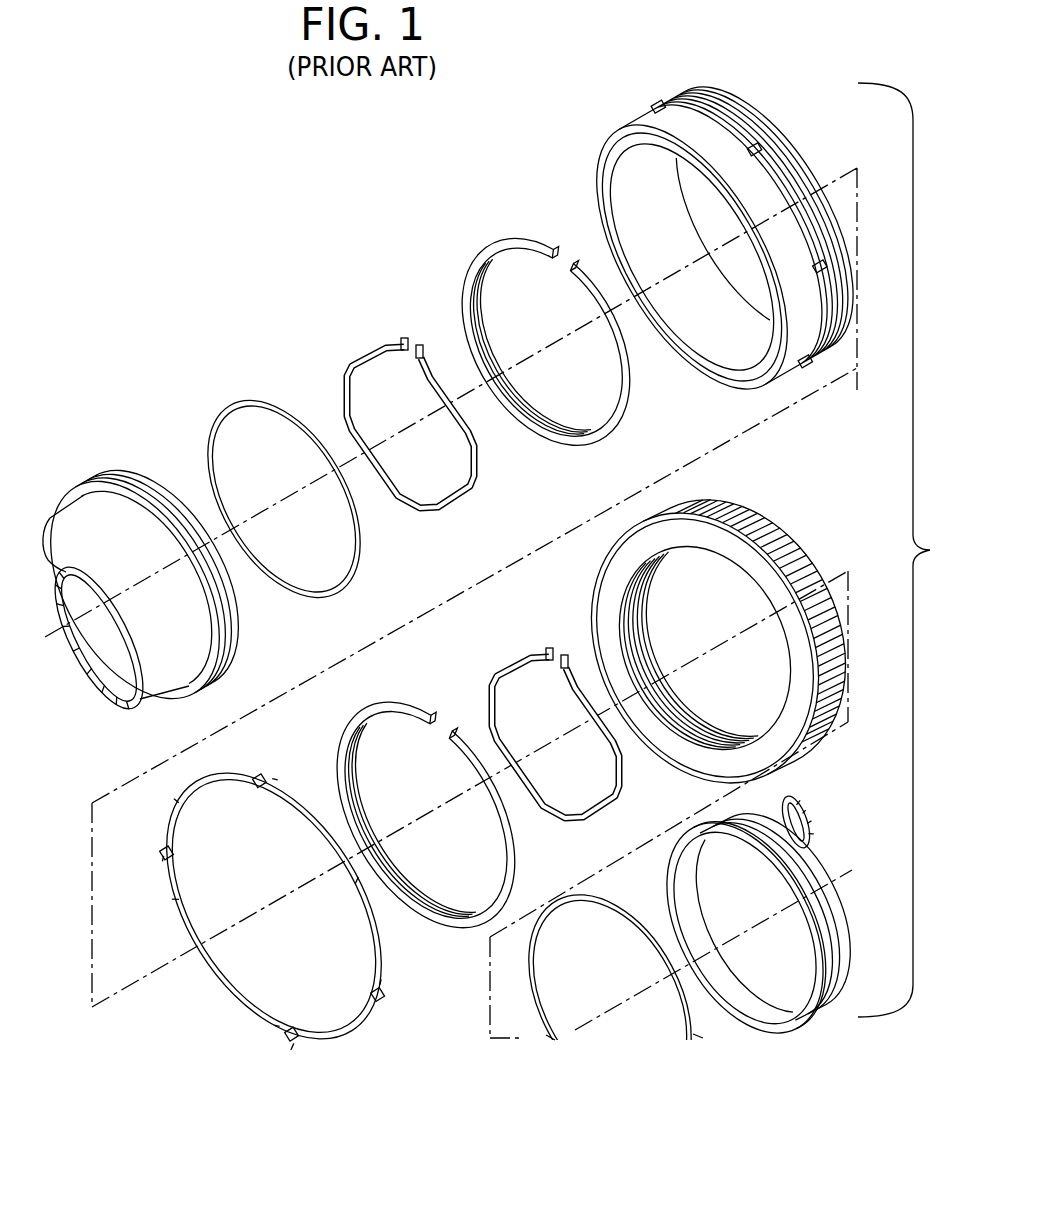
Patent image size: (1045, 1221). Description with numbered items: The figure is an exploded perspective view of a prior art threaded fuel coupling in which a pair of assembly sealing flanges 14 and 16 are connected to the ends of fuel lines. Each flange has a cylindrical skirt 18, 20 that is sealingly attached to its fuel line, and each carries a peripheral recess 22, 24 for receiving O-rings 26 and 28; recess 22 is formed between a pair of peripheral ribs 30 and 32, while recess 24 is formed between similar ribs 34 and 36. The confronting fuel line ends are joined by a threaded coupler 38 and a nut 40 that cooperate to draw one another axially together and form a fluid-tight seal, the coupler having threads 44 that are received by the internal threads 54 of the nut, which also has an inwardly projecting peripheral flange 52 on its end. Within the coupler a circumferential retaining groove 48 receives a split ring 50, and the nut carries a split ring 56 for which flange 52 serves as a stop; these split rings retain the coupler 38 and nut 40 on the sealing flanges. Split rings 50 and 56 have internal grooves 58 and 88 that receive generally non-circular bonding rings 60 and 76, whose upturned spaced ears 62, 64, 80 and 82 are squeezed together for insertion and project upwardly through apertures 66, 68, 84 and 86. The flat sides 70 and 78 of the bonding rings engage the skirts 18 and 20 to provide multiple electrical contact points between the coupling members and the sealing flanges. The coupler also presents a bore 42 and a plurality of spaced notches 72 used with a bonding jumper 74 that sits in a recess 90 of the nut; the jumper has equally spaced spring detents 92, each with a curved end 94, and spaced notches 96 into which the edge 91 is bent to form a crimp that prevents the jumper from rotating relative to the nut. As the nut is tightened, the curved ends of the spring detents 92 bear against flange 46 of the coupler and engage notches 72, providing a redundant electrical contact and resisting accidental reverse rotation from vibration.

The assembly sealing flange 14 is at (155, 592).
The assembly sealing flange 16 is at (757, 901).
The cylindrical skirt 18 is at (195, 638).
The cylindrical skirt 20 is at (790, 905).
The peripheral recess 22 is at (133, 490).
The peripheral recess 24 is at (702, 835).
The O-ring 26 is at (287, 418).
The O-ring 28 is at (613, 913).
The peripheral rib 30 is at (97, 494).
The peripheral rib 32 is at (186, 496).
The peripheral rib 34 is at (793, 885).
The peripheral rib 36 is at (820, 932).
The threaded coupler 38 is at (720, 226).
The nut 40 is at (717, 635).
The bore 42 is at (700, 388).
The threads 44 is at (785, 135).
The flange 46 is at (836, 352).
The circumferential retaining groove 48 is at (598, 236).
The split ring 50 is at (525, 336).
The peripheral flange 52 is at (660, 624).
The internal threads 54 is at (655, 580).
The split ring 56 is at (419, 810).
The internal groove 58 is at (518, 400).
The bonding ring 60 is at (446, 401).
The upturned ear 62 is at (401, 339).
The upturned ear 64 is at (423, 351).
The aperture 66 is at (551, 255).
The aperture 68 is at (569, 277).
The flat side 70 is at (372, 362).
The notch 72 is at (660, 112).
The bonding jumper 74 is at (271, 908).
The bonding ring 76 is at (535, 650).
The flat side 78 is at (510, 660).
The upturned ear 80 is at (533, 702).
The upturned ear 82 is at (565, 662).
The aperture 84 is at (428, 712).
The aperture 86 is at (452, 726).
The internal groove 88 is at (357, 808).
The recess 90 is at (680, 522).
The edge 91 is at (600, 550).
The spring detent 92 is at (274, 915).
The curved end 94 is at (277, 911).
The notch 96 is at (173, 893).